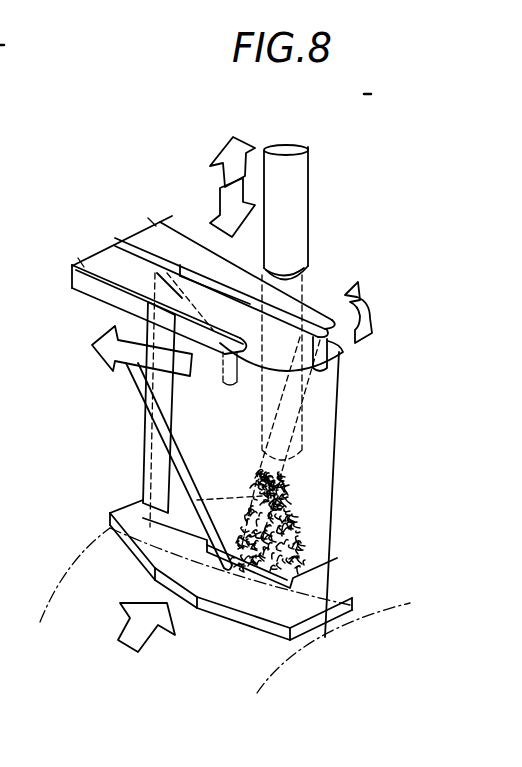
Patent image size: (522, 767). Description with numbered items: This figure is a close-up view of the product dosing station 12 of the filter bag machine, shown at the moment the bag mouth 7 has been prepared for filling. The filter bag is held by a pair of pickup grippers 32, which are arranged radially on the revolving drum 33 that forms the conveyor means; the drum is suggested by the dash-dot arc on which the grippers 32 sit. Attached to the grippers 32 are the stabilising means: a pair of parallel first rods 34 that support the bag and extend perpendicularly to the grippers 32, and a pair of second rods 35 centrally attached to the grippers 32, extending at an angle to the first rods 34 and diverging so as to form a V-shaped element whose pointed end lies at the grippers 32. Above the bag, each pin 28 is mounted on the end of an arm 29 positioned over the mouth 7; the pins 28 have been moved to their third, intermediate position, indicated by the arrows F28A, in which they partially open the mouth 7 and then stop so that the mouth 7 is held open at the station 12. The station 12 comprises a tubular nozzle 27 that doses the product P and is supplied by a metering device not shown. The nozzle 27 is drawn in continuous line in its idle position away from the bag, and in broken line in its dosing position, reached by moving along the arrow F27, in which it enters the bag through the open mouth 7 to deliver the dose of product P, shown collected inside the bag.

The mouth 7 is at (340, 354).
The dosing station 12 is at (130, 222).
The tubular nozzle 27 is at (298, 170).
The pin 28 is at (320, 342).
The arm 29 is at (118, 270).
The gripper 32 is at (333, 590).
The revolving drum 33 is at (396, 606).
The first rods 34 is at (145, 331).
The second rods 35 is at (232, 493).
The product P is at (293, 507).
The arrow F27 is at (228, 205).
The arrows F28A is at (130, 363).